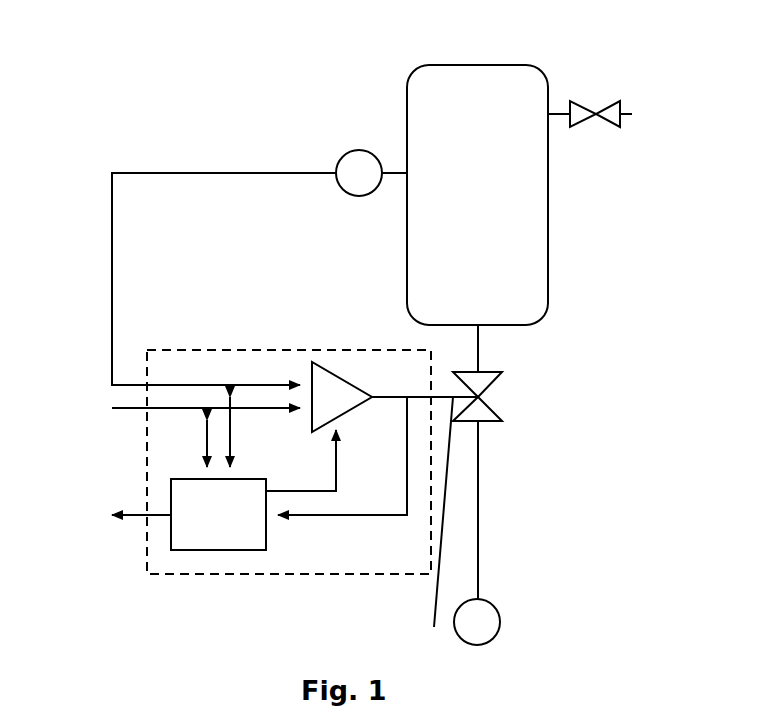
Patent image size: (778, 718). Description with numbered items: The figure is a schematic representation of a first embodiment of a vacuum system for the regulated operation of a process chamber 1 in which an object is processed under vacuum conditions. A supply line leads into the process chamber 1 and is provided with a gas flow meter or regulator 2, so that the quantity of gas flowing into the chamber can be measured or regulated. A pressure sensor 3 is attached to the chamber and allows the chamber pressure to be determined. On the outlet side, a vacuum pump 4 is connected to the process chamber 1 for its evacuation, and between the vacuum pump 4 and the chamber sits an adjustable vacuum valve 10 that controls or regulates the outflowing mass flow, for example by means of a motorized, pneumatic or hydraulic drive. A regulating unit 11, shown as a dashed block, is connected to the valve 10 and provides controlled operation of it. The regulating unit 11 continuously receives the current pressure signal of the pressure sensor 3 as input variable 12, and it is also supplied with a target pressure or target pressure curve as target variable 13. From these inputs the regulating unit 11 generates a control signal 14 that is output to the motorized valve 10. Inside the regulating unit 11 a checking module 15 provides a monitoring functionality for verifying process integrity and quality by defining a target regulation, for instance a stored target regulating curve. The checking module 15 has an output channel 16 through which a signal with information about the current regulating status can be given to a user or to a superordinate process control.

The process chamber 1 is at (430, 90).
The gas flow meter or regulator 2 is at (608, 102).
The pressure sensor 3 is at (359, 160).
The vacuum pump 4 is at (490, 620).
The adjustable vacuum valve 10 is at (478, 408).
The regulating unit 11 is at (253, 362).
The input variable 12 is at (112, 313).
The target variable 13 is at (127, 410).
The control signal 14 is at (434, 627).
The checking module 15 is at (183, 538).
The output channel 16 is at (137, 517).